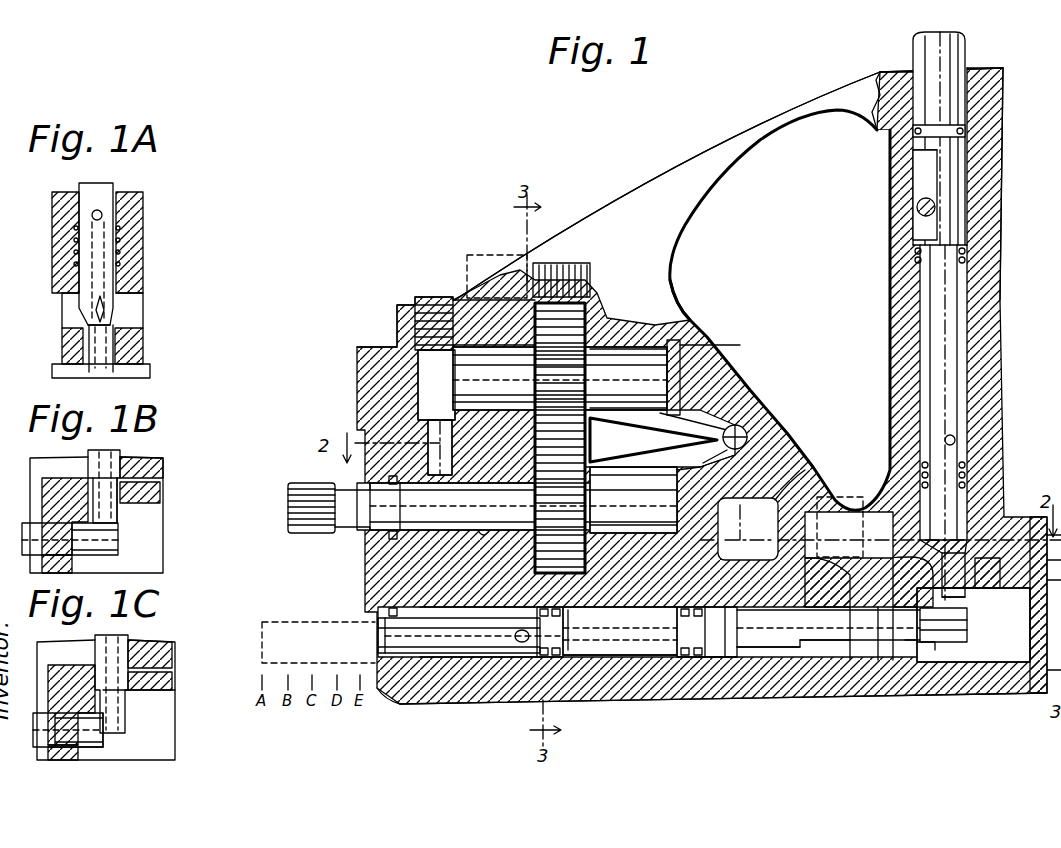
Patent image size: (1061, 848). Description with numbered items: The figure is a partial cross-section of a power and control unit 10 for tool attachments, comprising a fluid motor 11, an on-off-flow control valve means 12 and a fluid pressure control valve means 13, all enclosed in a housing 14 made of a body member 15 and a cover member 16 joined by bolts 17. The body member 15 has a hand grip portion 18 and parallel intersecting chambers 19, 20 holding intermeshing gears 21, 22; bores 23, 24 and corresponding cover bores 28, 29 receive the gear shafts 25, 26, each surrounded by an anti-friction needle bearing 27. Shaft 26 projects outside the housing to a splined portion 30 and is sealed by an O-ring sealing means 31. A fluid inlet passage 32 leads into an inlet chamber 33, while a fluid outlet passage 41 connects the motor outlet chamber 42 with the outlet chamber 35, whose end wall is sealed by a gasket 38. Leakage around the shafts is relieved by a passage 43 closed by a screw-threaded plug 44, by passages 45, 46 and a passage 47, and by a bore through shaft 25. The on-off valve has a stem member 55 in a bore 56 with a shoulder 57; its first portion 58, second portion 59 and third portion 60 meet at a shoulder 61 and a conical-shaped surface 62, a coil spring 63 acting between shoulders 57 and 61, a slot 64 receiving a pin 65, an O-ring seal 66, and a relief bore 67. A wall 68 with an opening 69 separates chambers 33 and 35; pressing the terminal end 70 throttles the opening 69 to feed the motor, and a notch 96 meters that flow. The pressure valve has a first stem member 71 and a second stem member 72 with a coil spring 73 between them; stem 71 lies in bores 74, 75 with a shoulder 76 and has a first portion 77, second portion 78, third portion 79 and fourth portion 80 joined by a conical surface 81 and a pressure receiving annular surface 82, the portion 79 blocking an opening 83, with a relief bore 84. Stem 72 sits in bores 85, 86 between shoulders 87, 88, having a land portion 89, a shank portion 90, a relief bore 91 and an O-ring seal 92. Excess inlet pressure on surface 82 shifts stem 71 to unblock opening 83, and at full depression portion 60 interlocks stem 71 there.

In FIG. 1, the power and control unit 10 is at (474, 226).
In FIG. 1, the fluid motor 11 is at (566, 276).
In FIG. 1, the on-off-flow control valve means 12 is at (908, 360).
In FIG. 1, the fluid pressure control valve means 13 is at (694, 676).
In FIG. 1, the housing 14 is at (598, 200).
In FIG. 1, the body member 15 is at (672, 270).
In FIG. 1, the cover member 16 is at (385, 345).
In FIG. 1, the bolts 17 is at (468, 274).
In FIG. 1, the hand grip portion 18 is at (900, 312).
In FIG. 1, the chamber 19 is at (585, 303).
In FIG. 1, the chamber 20 is at (600, 545).
In FIG. 1, the gear 21 is at (472, 340).
In FIG. 1, the gear 22 is at (545, 493).
In FIG. 1, the bore 23 is at (682, 345).
In FIG. 1, the bore 24 is at (675, 475).
In FIG. 1, the gear shaft 25 is at (612, 350).
In FIG. 1, the gear shaft 26 is at (462, 501).
In FIG. 1, the anti-friction needle bearing 27 is at (643, 347).
In FIG. 1, the bore 28 is at (456, 365).
In FIG. 1, the bore 29 is at (485, 540).
In FIG. 1, the splined portion 30 is at (288, 505).
In FIG. 1, the O-ring sealing means 31 is at (388, 537).
In FIG. 1, the fluid inlet passage 32 is at (800, 478).
In FIG. 1, the inlet chamber 33 is at (879, 561).
In FIG. 1, the outlet chamber 35 is at (1014, 656).
In FIG. 1C, the outlet chamber 35 is at (164, 755).
In FIG. 1, the gasket 38 is at (1038, 695).
In FIG. 1, the fluid outlet passage 41 is at (759, 539).
In FIG. 1, the motor outlet chamber 42 is at (642, 503).
In FIG. 1, the passage 43 is at (428, 432).
In FIG. 1, the screw-threaded plug 44 is at (415, 300).
In FIG. 1, the passage 45 is at (720, 410).
In FIG. 1, the passage 46 is at (715, 458).
In FIG. 1, the passage 47 is at (747, 437).
In FIG. 1, the stem member 55 is at (981, 223).
In FIG. 1A, the stem member 55 is at (125, 188).
In FIG. 1, the bore 56 is at (913, 150).
In FIG. 1, the shoulder 57 is at (968, 472).
In FIG. 1, the first portion 58 is at (960, 96).
In FIG. 1, the second portion 59 is at (955, 325).
In FIG. 1B, the second portion 59 is at (120, 457).
In FIG. 1, the third portion 60 is at (952, 598).
In FIG. 1B, the third portion 60 is at (120, 532).
In FIG. 1, the shoulder 61 is at (918, 252).
In FIG. 1, the conical-shaped surface 62 is at (940, 549).
In FIG. 1A, the conical-shaped surface 62 is at (118, 333).
In FIG. 1B, the conical-shaped surface 62 is at (120, 480).
In FIG. 1, the coil spring 63 is at (965, 260).
In FIG. 1, the slot 64 is at (920, 170).
In FIG. 1, the pin 65 is at (917, 206).
In FIG. 1, the O-ring seal 66 is at (963, 131).
In FIG. 1, the bore 67 is at (945, 440).
In FIG. 1, the wall 68 is at (893, 585).
In FIG. 1, the opening 69 is at (960, 572).
In FIG. 1A, the opening 69 is at (86, 346).
In FIG. 1B, the opening 69 is at (120, 510).
In FIG. 1, the terminal end 70 is at (915, 37).
In FIG. 1, the first stem member 71 is at (784, 672).
In FIG. 1, the second stem member 72 is at (459, 670).
In FIG. 1, the coil spring 73 is at (570, 617).
In FIG. 1, the bore 74 is at (610, 660).
In FIG. 1, the bore 75 is at (815, 660).
In FIG. 1, the shoulder 76 is at (735, 660).
In FIG. 1, the first portion 77 is at (720, 612).
In FIG. 1, the second portion 78 is at (795, 612).
In FIG. 1, the third portion 79 is at (880, 660).
In FIG. 1, the fourth portion 80 is at (968, 646).
In FIG. 1C, the fourth portion 80 is at (105, 742).
In FIG. 1, the conical surface 81 is at (922, 646).
In FIG. 1C, the conical surface 81 is at (65, 762).
In FIG. 1, the pressure receiving annular surface 82 is at (855, 660).
In FIG. 1, the opening 83 is at (905, 660).
In FIG. 1C, the opening 83 is at (85, 760).
In FIG. 1, the bore 84 is at (657, 647).
In FIG. 1, the bore 85 is at (470, 660).
In FIG. 1, the bore 86 is at (385, 621).
In FIG. 1, the shoulder 87 is at (520, 619).
In FIG. 1, the shoulder 88 is at (415, 655).
In FIG. 1, the land portion 89 is at (540, 658).
In FIG. 1, the shank portion 90 is at (450, 606).
In FIG. 1, the bore 91 is at (566, 630).
In FIG. 1, the O-ring seal 92 is at (392, 612).
In FIG. 1A, the notch 96 is at (104, 314).